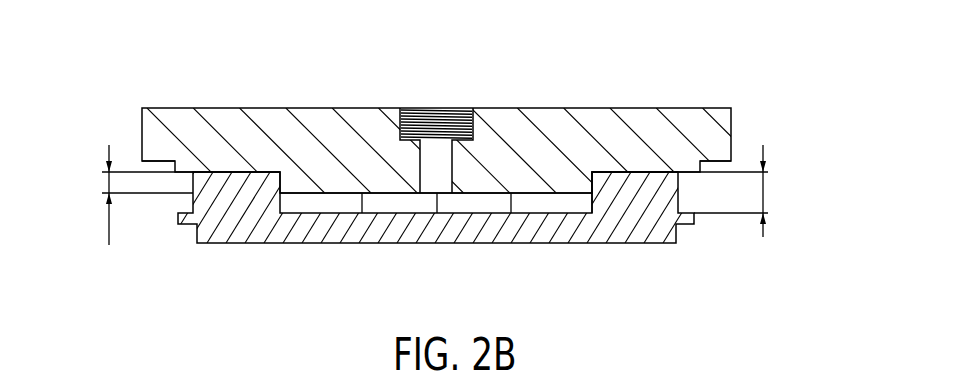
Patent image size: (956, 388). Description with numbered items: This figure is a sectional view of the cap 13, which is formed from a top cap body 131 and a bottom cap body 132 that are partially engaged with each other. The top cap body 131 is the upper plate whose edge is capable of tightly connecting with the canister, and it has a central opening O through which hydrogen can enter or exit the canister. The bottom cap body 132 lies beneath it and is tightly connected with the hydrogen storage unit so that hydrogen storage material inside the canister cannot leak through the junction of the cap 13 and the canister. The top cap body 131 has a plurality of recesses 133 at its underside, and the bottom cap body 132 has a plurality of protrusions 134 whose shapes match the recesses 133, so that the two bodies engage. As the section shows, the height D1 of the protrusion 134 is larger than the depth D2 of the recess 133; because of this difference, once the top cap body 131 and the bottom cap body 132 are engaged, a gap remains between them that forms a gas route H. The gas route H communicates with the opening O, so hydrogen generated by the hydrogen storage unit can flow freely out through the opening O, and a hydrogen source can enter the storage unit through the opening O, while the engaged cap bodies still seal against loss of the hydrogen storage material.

The cap 13 is at (417, 162).
The top cap body 131 is at (465, 105).
The bottom cap body 132 is at (447, 239).
The recess 133 is at (228, 172).
The protrusion 134 is at (592, 203).
The opening O is at (435, 98).
The gas route H is at (317, 212).
The height of the protrusion D1 is at (744, 191).
The depth of the recess D2 is at (136, 196).